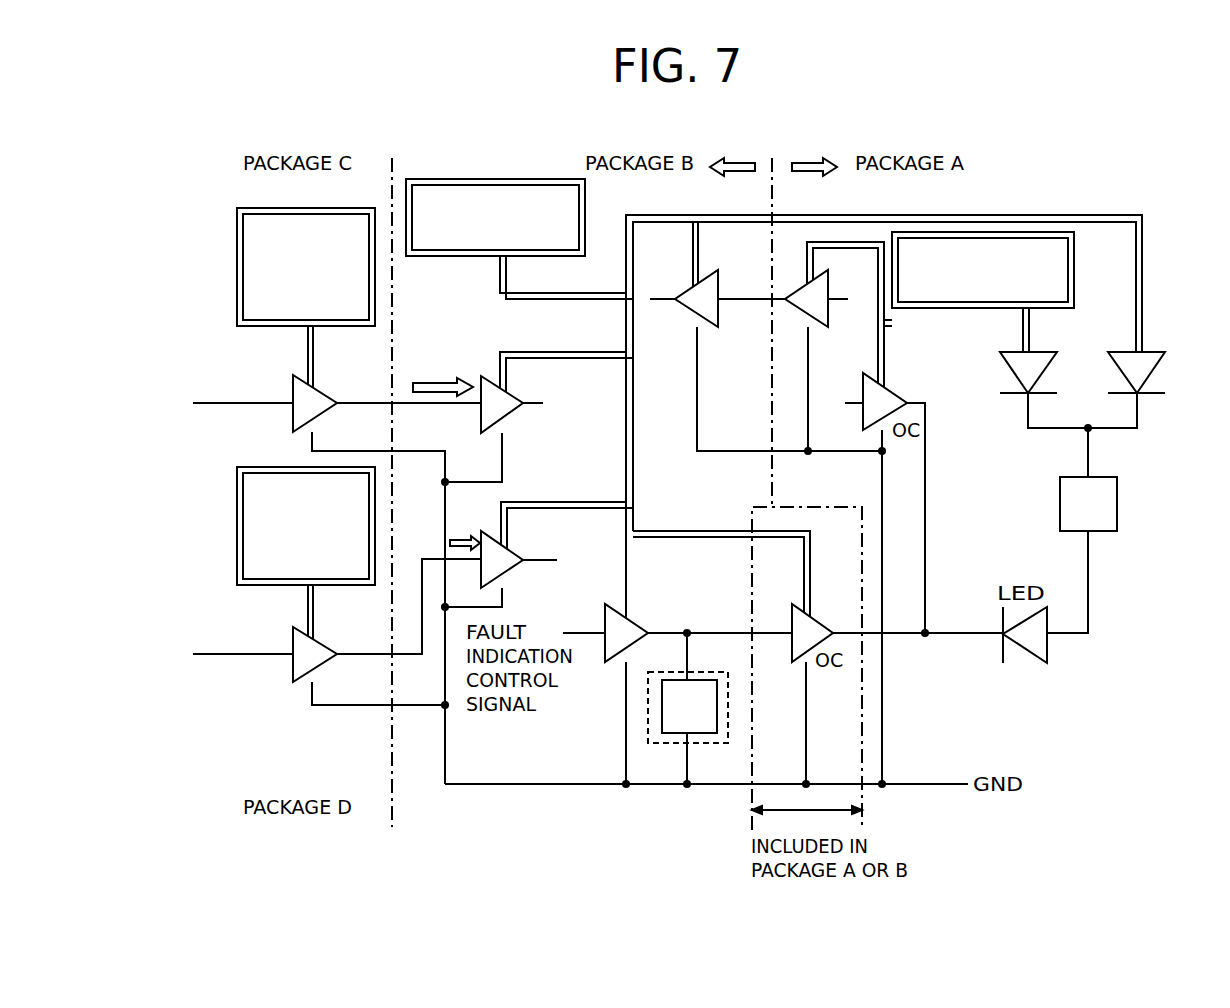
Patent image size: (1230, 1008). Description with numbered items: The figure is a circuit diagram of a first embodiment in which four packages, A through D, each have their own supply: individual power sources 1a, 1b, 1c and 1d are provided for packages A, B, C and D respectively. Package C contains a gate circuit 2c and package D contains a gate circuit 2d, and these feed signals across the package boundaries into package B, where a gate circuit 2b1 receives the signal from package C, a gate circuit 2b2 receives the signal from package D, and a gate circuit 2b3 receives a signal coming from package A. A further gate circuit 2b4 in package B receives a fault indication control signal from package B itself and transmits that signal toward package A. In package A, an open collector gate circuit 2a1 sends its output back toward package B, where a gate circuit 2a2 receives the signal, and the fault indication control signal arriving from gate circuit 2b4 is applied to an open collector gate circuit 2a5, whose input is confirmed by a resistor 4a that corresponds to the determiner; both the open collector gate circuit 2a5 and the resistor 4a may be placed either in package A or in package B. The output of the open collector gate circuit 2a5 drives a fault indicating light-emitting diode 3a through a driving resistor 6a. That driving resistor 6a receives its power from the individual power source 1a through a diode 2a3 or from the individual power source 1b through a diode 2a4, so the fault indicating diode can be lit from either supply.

The individual power source 1a is at (1077, 285).
The individual power source 1b is at (586, 222).
The individual power source 1c is at (358, 208).
The individual power source 1d is at (335, 586).
The open collector gate circuit 2a1 is at (890, 390).
The gate circuit 2a2 is at (828, 311).
The diode 2a3 is at (1042, 352).
The diode 2a4 is at (1150, 352).
The open collector gate circuit 2a5 is at (838, 600).
The gate circuit 2b1 is at (510, 418).
The gate circuit 2b2 is at (518, 552).
The gate circuit 2b3 is at (688, 287).
The gate circuit 2b4 is at (603, 618).
The gate circuit 2c is at (330, 394).
The gate circuit 2d is at (317, 667).
The fault indicating light-emitting diode 3a is at (1048, 655).
The resistor 4a is at (708, 672).
The LED driving resistor 6a is at (1118, 498).